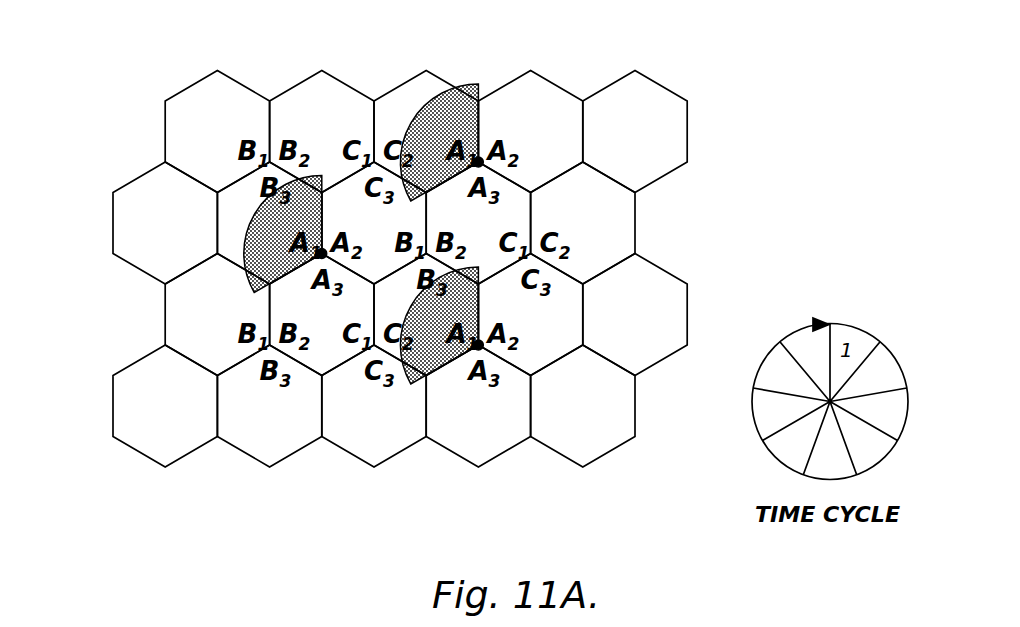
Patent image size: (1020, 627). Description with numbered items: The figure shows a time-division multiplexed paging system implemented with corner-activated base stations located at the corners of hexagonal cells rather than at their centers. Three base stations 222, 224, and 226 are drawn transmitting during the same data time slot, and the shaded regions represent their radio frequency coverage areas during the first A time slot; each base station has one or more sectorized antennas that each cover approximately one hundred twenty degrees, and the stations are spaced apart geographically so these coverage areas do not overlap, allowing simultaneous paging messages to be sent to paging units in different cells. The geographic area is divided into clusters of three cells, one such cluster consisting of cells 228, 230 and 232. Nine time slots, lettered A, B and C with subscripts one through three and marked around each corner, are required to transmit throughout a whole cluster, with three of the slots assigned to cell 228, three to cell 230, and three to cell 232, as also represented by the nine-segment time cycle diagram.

The base station 222 is at (480, 162).
The base station 224 is at (322, 254).
The base station 226 is at (478, 346).
The cell 228 is at (352, 215).
The cell 230 is at (322, 342).
The cell 232 is at (427, 338).